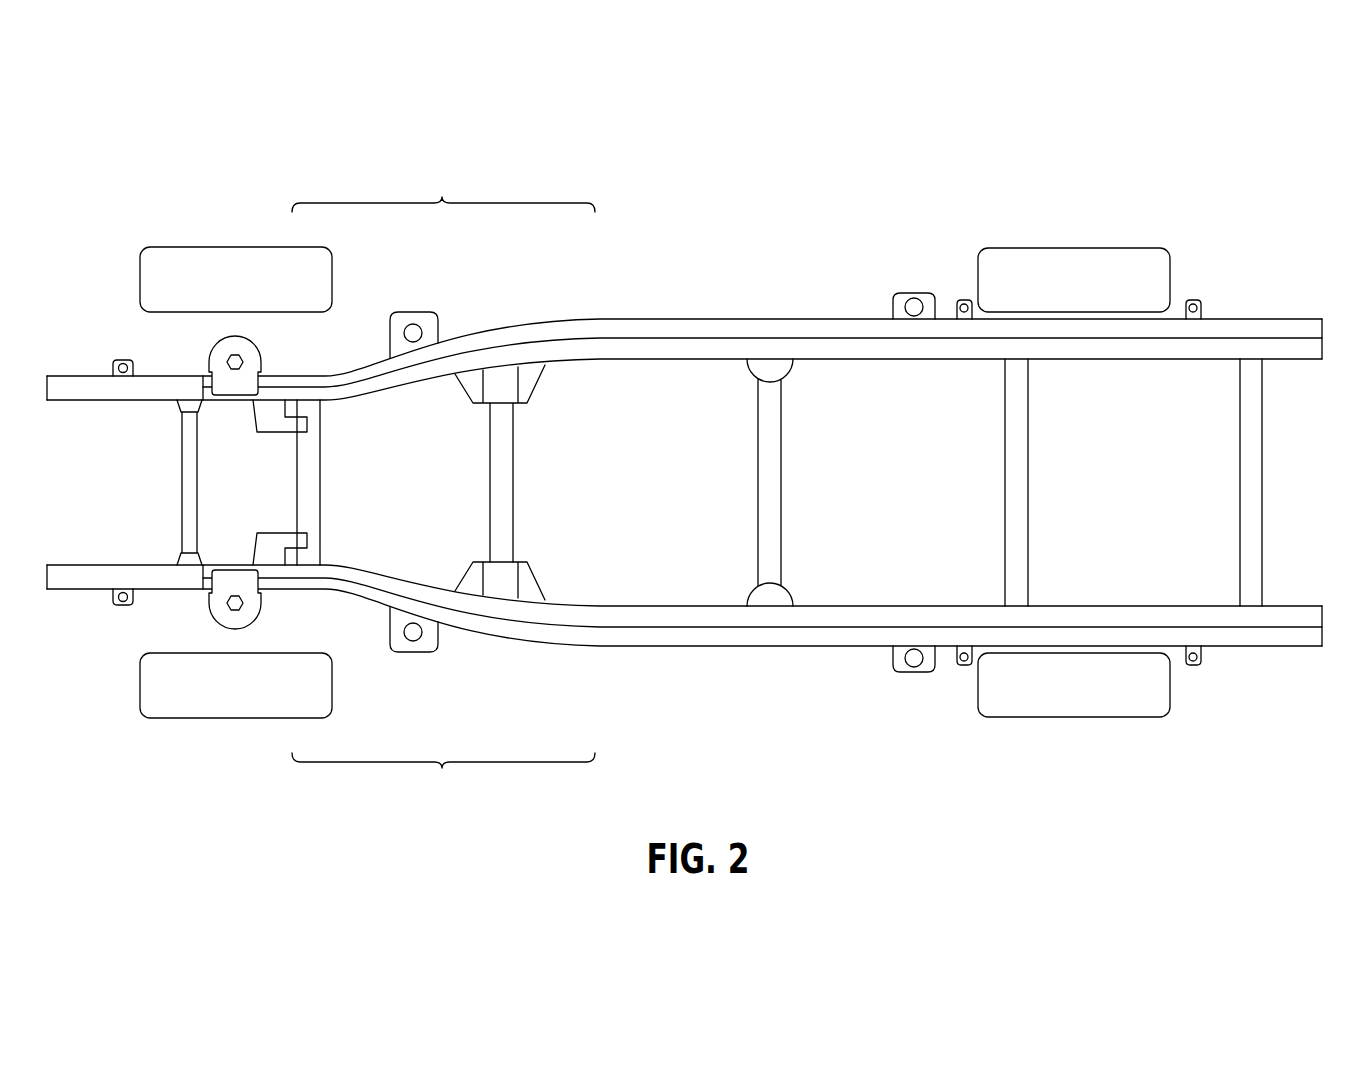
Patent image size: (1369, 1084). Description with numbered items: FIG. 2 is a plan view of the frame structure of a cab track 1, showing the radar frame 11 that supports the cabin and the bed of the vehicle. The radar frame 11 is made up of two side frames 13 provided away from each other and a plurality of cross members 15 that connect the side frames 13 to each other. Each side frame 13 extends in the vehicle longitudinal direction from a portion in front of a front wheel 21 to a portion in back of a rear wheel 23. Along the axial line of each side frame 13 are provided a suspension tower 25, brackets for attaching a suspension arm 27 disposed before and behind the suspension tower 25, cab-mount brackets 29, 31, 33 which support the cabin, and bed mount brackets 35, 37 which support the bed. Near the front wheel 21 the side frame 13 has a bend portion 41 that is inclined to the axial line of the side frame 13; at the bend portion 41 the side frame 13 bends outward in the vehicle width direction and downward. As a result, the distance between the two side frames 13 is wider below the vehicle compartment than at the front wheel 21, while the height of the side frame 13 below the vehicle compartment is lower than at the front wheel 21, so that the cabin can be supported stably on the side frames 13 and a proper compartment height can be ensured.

The cab track 1 is at (807, 218).
The radar frame 11 is at (745, 297).
The side frame 13 is at (650, 319).
The cross member 15 is at (518, 480).
The front wheel 21 is at (243, 258).
The rear wheel 23 is at (1080, 248).
The suspension tower 25 is at (213, 347).
The bracket for attaching a suspension arm 27 is at (188, 408).
The cab-mount bracket 29 is at (121, 360).
The cab-mount bracket 31 is at (440, 322).
The cab-mount bracket 33 is at (913, 293).
The bed mount bracket 35 is at (963, 300).
The bed mount bracket 37 is at (1193, 300).
The bend portion 41 is at (443, 486).